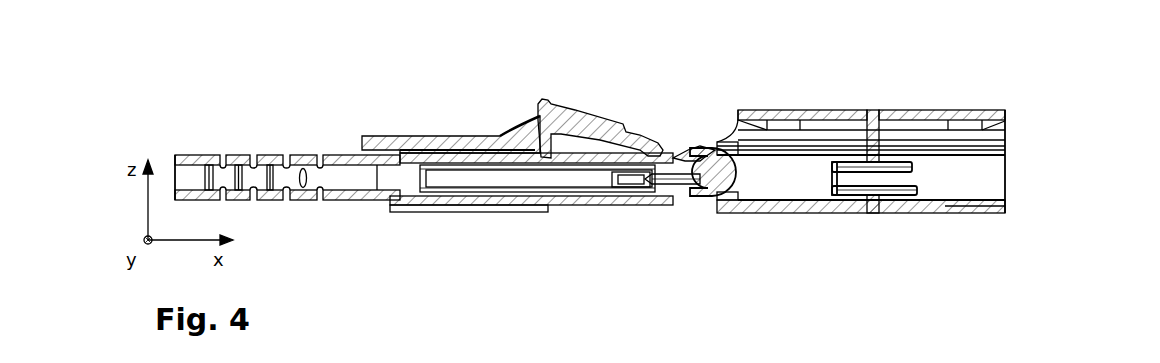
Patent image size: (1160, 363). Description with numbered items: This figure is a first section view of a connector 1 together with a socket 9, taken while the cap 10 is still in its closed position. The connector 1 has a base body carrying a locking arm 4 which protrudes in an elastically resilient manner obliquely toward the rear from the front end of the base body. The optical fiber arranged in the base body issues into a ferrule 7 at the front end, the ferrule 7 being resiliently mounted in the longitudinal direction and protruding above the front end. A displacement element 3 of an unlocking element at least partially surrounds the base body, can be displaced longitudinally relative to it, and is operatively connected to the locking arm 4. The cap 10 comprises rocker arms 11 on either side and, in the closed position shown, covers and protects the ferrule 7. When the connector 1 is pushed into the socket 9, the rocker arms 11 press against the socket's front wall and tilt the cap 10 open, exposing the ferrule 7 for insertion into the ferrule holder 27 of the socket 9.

The connector 1 is at (287, 127).
The displacement element 3 is at (531, 133).
The locking arm 4 is at (600, 106).
The ferrule 7 is at (670, 107).
The socket 9 is at (893, 133).
The cap 10 is at (861, 133).
The rocker arms 11 is at (729, 125).
The ferrule holder 27 is at (915, 124).